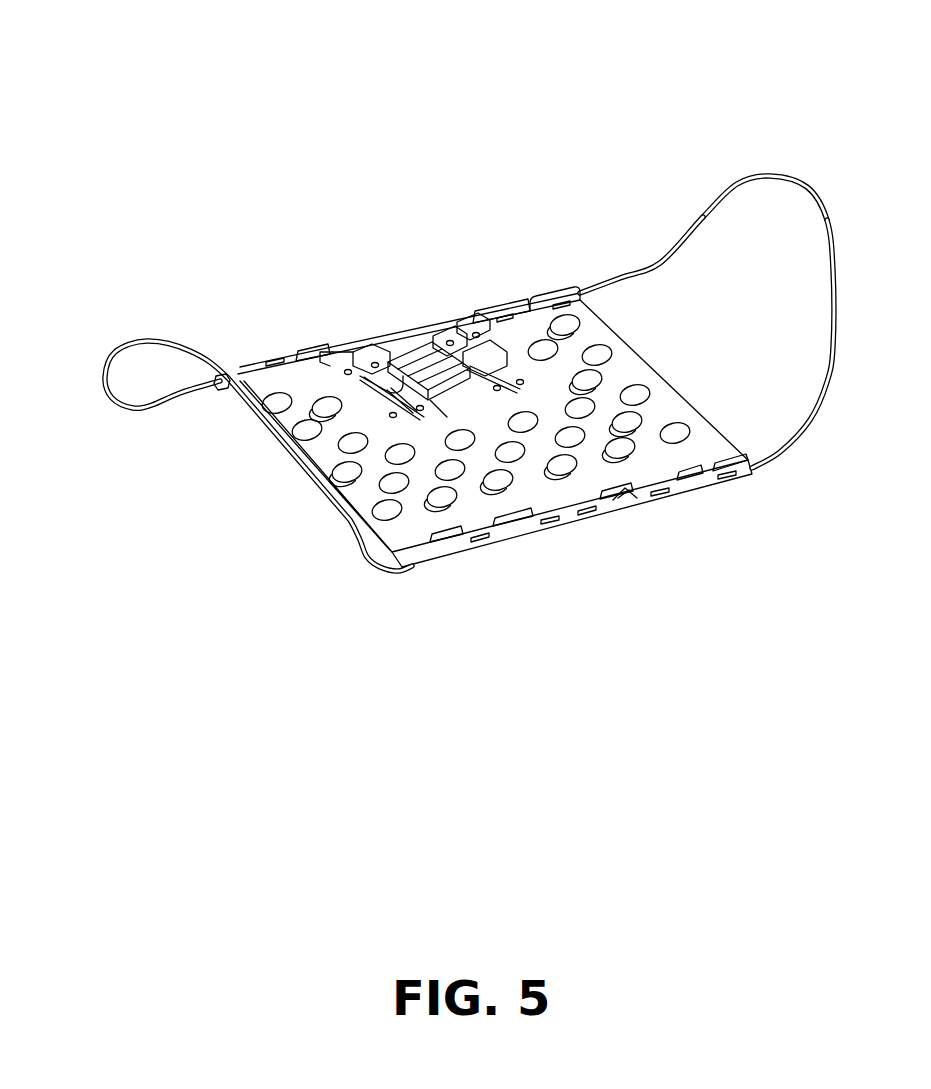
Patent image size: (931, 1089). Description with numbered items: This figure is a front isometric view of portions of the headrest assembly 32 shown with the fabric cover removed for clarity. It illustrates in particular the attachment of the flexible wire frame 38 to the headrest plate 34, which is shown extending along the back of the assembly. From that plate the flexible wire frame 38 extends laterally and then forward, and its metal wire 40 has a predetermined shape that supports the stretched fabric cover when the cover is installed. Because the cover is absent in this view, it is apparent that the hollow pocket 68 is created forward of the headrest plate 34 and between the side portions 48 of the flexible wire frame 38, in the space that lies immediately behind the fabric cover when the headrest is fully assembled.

The headrest assembly 32 is at (735, 84).
The headrest plate 34 is at (307, 388).
The flexible wire frame 38 is at (836, 334).
The metal wire 40 is at (790, 175).
The side portions 48 is at (89, 362).
The hollow pocket 68 is at (658, 272).